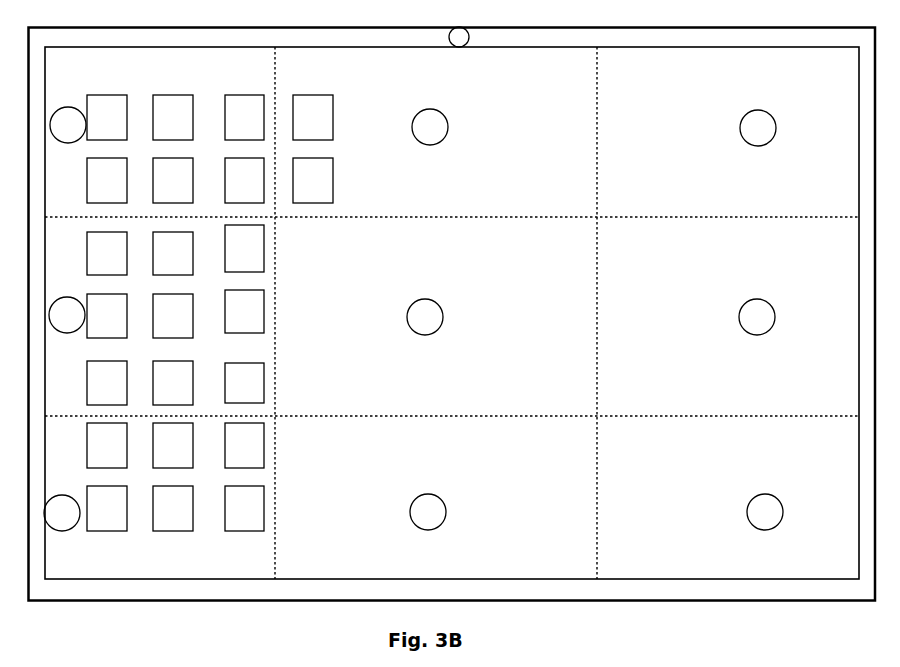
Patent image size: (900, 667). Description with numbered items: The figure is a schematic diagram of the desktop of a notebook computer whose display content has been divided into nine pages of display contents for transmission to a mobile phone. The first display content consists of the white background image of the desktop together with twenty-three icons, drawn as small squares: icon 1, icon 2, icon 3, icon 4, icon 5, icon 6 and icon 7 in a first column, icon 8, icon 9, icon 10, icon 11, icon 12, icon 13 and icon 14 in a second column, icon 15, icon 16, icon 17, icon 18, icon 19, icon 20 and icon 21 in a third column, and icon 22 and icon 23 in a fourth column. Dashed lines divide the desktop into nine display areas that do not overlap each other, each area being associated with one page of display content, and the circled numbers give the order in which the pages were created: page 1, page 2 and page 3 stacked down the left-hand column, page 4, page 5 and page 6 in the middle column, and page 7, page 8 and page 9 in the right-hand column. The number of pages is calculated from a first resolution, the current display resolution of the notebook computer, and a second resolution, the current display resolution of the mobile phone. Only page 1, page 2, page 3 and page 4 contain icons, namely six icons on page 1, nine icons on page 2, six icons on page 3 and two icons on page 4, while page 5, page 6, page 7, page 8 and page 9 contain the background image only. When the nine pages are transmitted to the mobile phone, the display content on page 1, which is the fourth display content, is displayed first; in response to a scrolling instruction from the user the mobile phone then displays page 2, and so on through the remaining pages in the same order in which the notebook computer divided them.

The page 1 is at (88, 119).
The page 2 is at (88, 245).
The page 3 is at (85, 381).
The page 4 is at (267, 223).
The page 5 is at (265, 352).
The page 6 is at (266, 476).
The page 7 is at (431, 320).
The page 8 is at (464, 215).
The page 9 is at (468, 344).
The icon 10 is at (173, 253).
The icon 11 is at (173, 316).
The icon 12 is at (173, 383).
The icon 13 is at (173, 445).
The icon 14 is at (173, 508).
The icon 15 is at (244, 117).
The icon 16 is at (244, 180).
The icon 17 is at (244, 248).
The icon 18 is at (244, 311).
The icon 19 is at (244, 383).
The icon 20 is at (244, 445).
The icon 21 is at (244, 508).
The icon 22 is at (313, 117).
The icon 23 is at (313, 180).